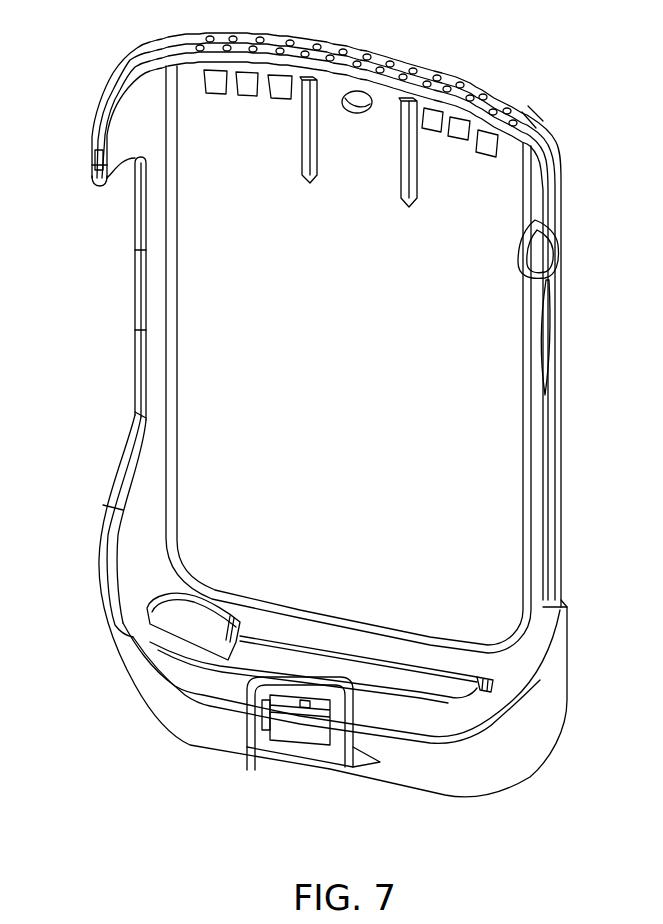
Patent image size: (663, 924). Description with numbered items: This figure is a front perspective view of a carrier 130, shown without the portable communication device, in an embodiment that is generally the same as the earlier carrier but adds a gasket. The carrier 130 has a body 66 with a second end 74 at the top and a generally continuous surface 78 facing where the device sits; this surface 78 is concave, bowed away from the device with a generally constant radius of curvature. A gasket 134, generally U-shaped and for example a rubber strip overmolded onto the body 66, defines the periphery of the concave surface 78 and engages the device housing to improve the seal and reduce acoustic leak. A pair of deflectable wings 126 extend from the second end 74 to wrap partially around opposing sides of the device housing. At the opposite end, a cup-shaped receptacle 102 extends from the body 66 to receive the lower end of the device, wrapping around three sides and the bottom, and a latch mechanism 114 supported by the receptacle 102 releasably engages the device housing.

The carrier 130 is at (553, 62).
The body 66 is at (552, 360).
The second end 74 is at (455, 84).
The surface 78 is at (455, 397).
The wings 126 is at (88, 152).
The gasket 134 is at (173, 232).
The receptacle 102 is at (188, 730).
The latch mechanism 114 is at (302, 744).